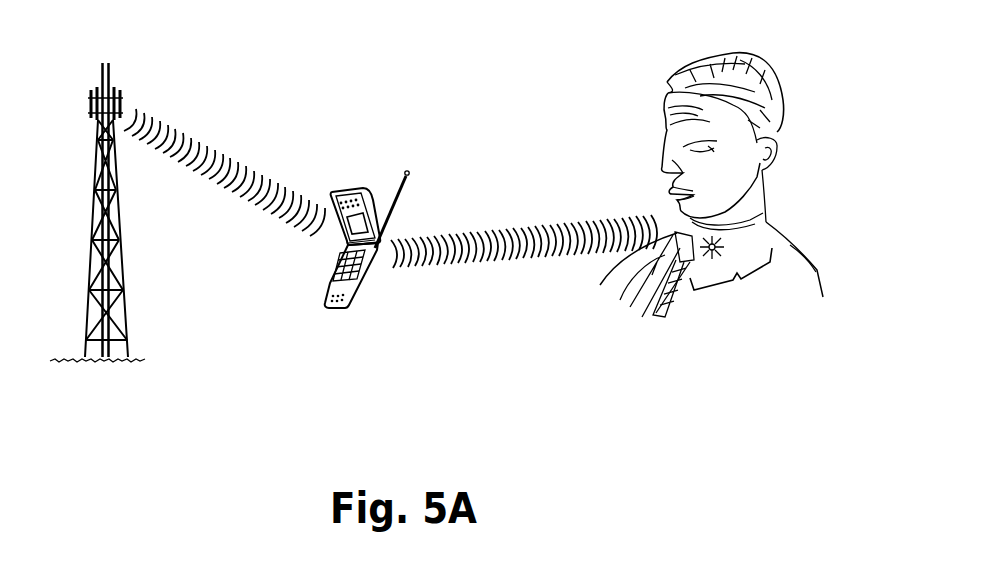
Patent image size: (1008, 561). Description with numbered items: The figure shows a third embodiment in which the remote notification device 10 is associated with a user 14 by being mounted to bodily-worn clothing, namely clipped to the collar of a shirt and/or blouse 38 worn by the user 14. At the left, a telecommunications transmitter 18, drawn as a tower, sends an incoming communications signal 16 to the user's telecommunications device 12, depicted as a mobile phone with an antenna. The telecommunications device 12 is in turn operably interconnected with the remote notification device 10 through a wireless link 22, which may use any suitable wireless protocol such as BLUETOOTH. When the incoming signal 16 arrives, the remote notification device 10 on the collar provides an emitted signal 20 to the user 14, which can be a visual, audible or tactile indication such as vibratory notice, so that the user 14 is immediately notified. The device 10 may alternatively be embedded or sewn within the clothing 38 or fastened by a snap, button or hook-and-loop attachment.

The telecommunications transmitter 18 is at (95, 170).
The incoming communications signal 16 is at (202, 140).
The telecommunications device 12 is at (353, 187).
The wireless link 22 is at (477, 232).
The remote notification device 10 is at (727, 247).
The user 14 is at (808, 253).
The shirt and/or blouse 38 is at (797, 280).
The emitted signal 20 is at (777, 278).